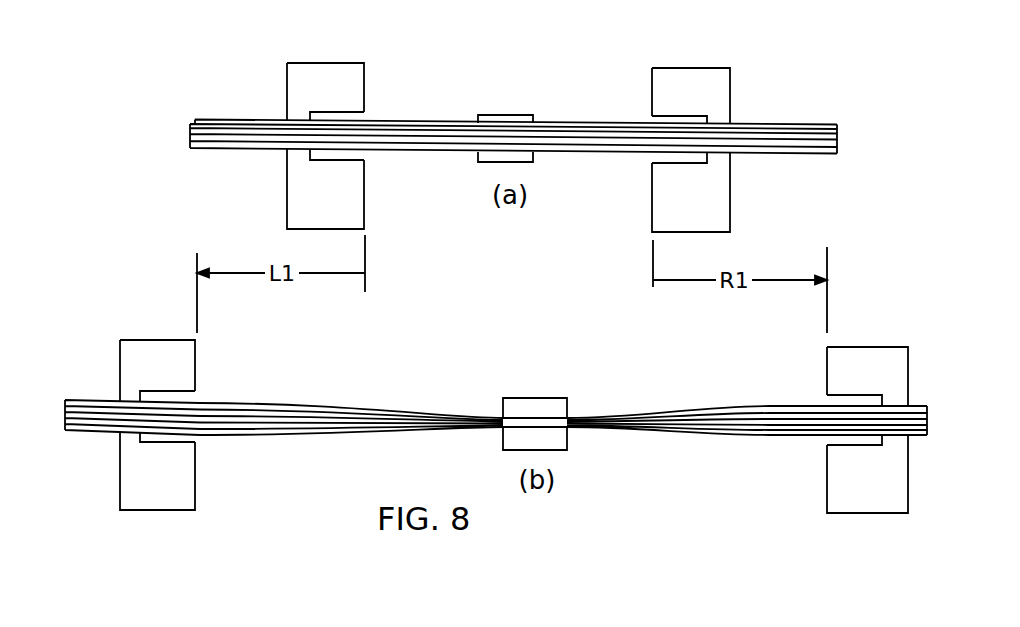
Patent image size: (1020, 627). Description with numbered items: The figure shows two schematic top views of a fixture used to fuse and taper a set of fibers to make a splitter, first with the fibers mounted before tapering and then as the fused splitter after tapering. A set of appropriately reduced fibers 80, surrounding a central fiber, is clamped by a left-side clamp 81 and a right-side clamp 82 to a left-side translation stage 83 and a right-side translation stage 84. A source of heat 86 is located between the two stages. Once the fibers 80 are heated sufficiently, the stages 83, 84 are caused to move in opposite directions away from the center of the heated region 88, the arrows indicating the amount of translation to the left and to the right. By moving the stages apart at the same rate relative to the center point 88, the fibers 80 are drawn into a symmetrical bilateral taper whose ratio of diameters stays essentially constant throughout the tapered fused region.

In FIG. 8a, the reduced fibers 80 is at (230, 120).
In FIG. 8b, the reduced fibers 80 is at (85, 400).
In FIG. 8a, the left-side clamp 81 is at (338, 115).
In FIG. 8a, the right-side clamp 82 is at (675, 120).
In FIG. 8a, the left-side translation stage 83 is at (305, 75).
In FIG. 8a, the right-side translation stage 84 is at (715, 77).
In FIG. 8a, the source of heat 86 is at (503, 118).
In FIG. 8b, the center of the heated region 88 is at (533, 418).